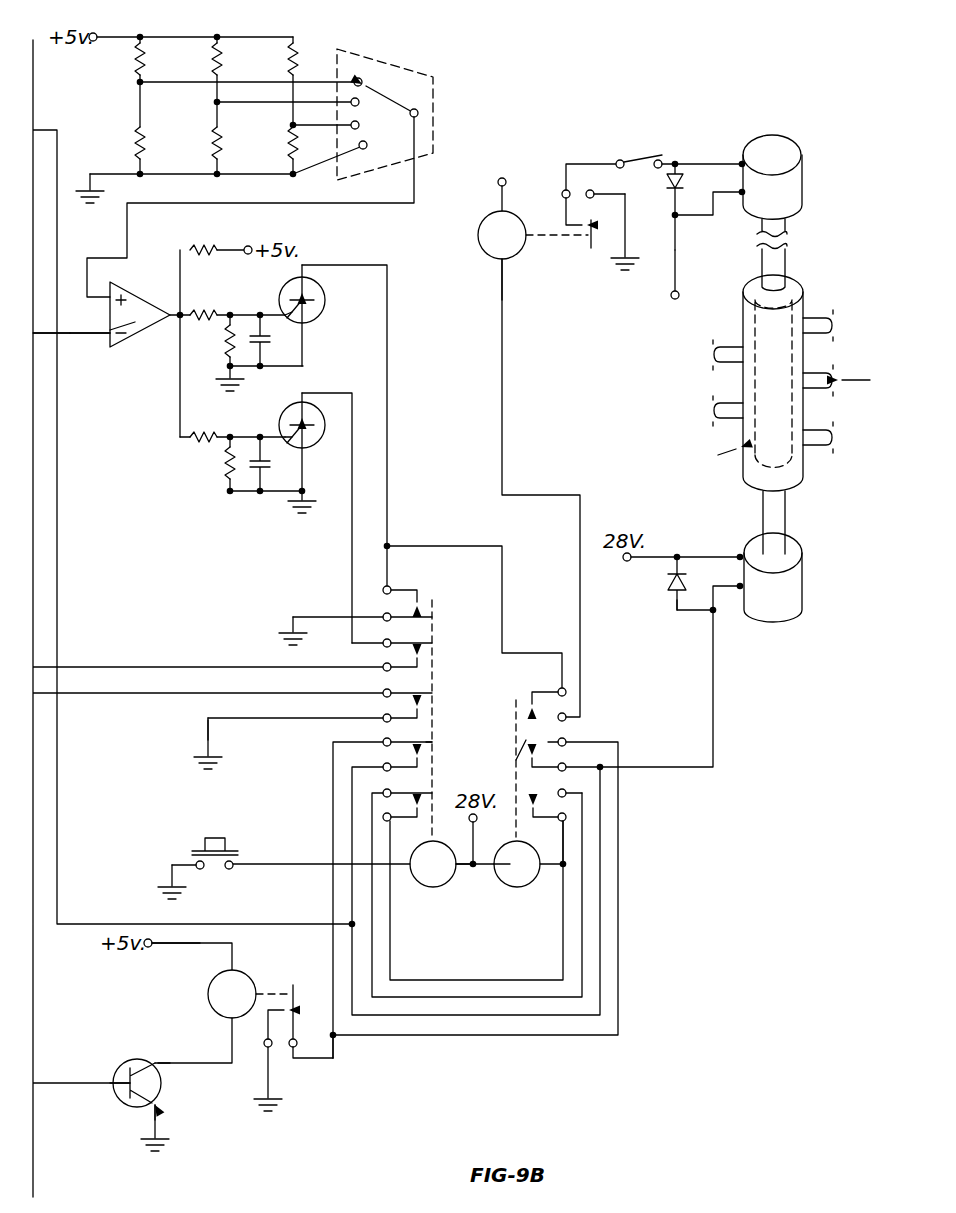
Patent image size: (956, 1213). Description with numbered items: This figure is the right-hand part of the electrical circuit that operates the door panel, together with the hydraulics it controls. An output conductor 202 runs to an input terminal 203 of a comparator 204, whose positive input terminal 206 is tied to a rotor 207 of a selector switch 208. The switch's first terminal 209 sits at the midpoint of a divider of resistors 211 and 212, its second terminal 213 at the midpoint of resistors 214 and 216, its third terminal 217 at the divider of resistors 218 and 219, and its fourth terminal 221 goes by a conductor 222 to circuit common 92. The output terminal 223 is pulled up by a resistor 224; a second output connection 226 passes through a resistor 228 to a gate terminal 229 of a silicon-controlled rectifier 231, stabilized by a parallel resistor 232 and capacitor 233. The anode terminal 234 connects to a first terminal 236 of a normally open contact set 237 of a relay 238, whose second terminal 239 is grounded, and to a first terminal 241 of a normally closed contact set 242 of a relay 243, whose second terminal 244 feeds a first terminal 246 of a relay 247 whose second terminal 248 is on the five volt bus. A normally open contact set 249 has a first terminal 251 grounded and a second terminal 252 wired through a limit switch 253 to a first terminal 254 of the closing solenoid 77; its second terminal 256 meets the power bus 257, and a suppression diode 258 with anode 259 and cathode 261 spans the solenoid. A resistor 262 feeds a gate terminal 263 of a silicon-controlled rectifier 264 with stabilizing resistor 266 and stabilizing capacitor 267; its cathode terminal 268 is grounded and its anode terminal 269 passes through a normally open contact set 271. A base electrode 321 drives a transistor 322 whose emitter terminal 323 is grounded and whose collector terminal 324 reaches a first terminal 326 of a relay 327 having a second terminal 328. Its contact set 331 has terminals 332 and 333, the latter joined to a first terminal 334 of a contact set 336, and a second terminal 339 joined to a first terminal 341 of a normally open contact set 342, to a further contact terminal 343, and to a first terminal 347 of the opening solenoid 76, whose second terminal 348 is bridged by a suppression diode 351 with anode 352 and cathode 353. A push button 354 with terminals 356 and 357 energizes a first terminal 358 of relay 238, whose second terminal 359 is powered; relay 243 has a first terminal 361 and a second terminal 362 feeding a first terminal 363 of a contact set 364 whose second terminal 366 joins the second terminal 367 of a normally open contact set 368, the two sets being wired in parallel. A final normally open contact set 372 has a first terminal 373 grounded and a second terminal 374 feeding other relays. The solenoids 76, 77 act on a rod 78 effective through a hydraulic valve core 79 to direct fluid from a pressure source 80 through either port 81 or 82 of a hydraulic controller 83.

The opening solenoid 76 is at (790, 580).
The closing solenoid 77 is at (788, 192).
The rod 78 is at (788, 262).
The hydraulic valve core 79 is at (745, 312).
The pressure source 80 is at (849, 380).
The port 81 is at (834, 325).
The port 82 is at (820, 445).
The hydraulic controller 83 is at (718, 453).
The circuit common 92 is at (80, 205).
The output conductor 202 is at (75, 340).
The input terminal 203 is at (104, 340).
The comparator 204 is at (138, 325).
The positive input terminal 206 is at (106, 312).
The rotor 207 is at (395, 100).
The selector switch 208 is at (434, 68).
The first terminal 209 is at (362, 74).
The resistor 211 is at (135, 56).
The resistor 212 is at (135, 142).
The second terminal 213 is at (400, 115).
The resistor 214 is at (212, 56).
The resistor 216 is at (212, 144).
The third terminal 217 is at (390, 135).
The resistor 218 is at (288, 56).
The resistor 219 is at (288, 144).
The fourth terminal 221 is at (367, 152).
The conductor 222 is at (278, 176).
The output terminal 223 is at (175, 310).
The resistor 224 is at (200, 245).
The second output connection 226 is at (190, 318).
The resistor 228 is at (226, 342).
The gate terminal 229 is at (294, 318).
The silicon-controlled rectifier 231 is at (320, 300).
The resistor 232 is at (228, 372).
The capacitor 233 is at (268, 350).
The anode terminal 234 is at (304, 267).
The first terminal 236 is at (390, 545).
The normally open contact set 237 is at (434, 610).
The relay 238 is at (430, 880).
The second terminal 239 is at (382, 614).
The first terminal 241 is at (522, 698).
The normally closed contact set 242 is at (550, 705).
The relay 243 is at (520, 876).
The second terminal 244 is at (520, 722).
The first terminal 246 is at (505, 265).
The relay 247 is at (487, 250).
The second terminal 248 is at (500, 210).
The normally open contact set 249 is at (583, 240).
The first terminal 251 is at (595, 235).
The second terminal 252 is at (563, 212).
The limit switch 253 is at (630, 160).
The first terminal 254 is at (743, 160).
The second terminal 256 is at (740, 205).
The power bus 257 is at (673, 303).
The suppression diode 258 is at (672, 230).
The anode 259 is at (682, 176).
The cathode 261 is at (672, 210).
The resistor 262 is at (198, 448).
The gate terminal 263 is at (290, 448).
The silicon-controlled rectifier 264 is at (326, 425).
The stabilizing resistor 266 is at (222, 478).
The stabilizing capacitor 267 is at (256, 478).
The cathode terminal 268 is at (306, 436).
The anode terminal 269 is at (305, 395).
The normally open contact set 271 is at (433, 655).
The base electrode 321 is at (116, 1095).
The transistor 322 is at (122, 1063).
The emitter terminal 323 is at (155, 1101).
The collector terminal 324 is at (160, 1062).
The first terminal 326 is at (230, 1030).
The relay 327 is at (210, 982).
The second terminal 328 is at (235, 970).
The contact set 331 is at (281, 1030).
The terminal 332 is at (264, 1020).
The second terminal 333 is at (287, 997).
The first terminal 334 is at (430, 742).
The contact set 336 is at (380, 745).
The second terminal 339 is at (320, 1048).
The first terminal 341 is at (545, 745).
The normally open contact set 342 is at (520, 750).
The relay contact 343 is at (570, 760).
The first terminal 347 is at (738, 592).
The second terminal 348 is at (738, 552).
The suppression diode 351 is at (662, 583).
The anode 352 is at (672, 586).
The cathode 353 is at (680, 552).
The push button 354 is at (218, 838).
The terminal 356 is at (204, 870).
The terminal 357 is at (233, 868).
The first terminal 358 is at (412, 878).
The second terminal 359 is at (462, 880).
The first terminal 361 is at (492, 878).
The second terminal 362 is at (555, 868).
The first terminal 363 is at (555, 822).
The contact set 364 is at (550, 806).
The second terminal 366 is at (575, 790).
The second terminal 367 is at (365, 790).
The normally open contact set 368 is at (375, 810).
The normally open contact set 372 is at (385, 718).
The first terminal 373 is at (210, 718).
The second terminal 374 is at (428, 690).